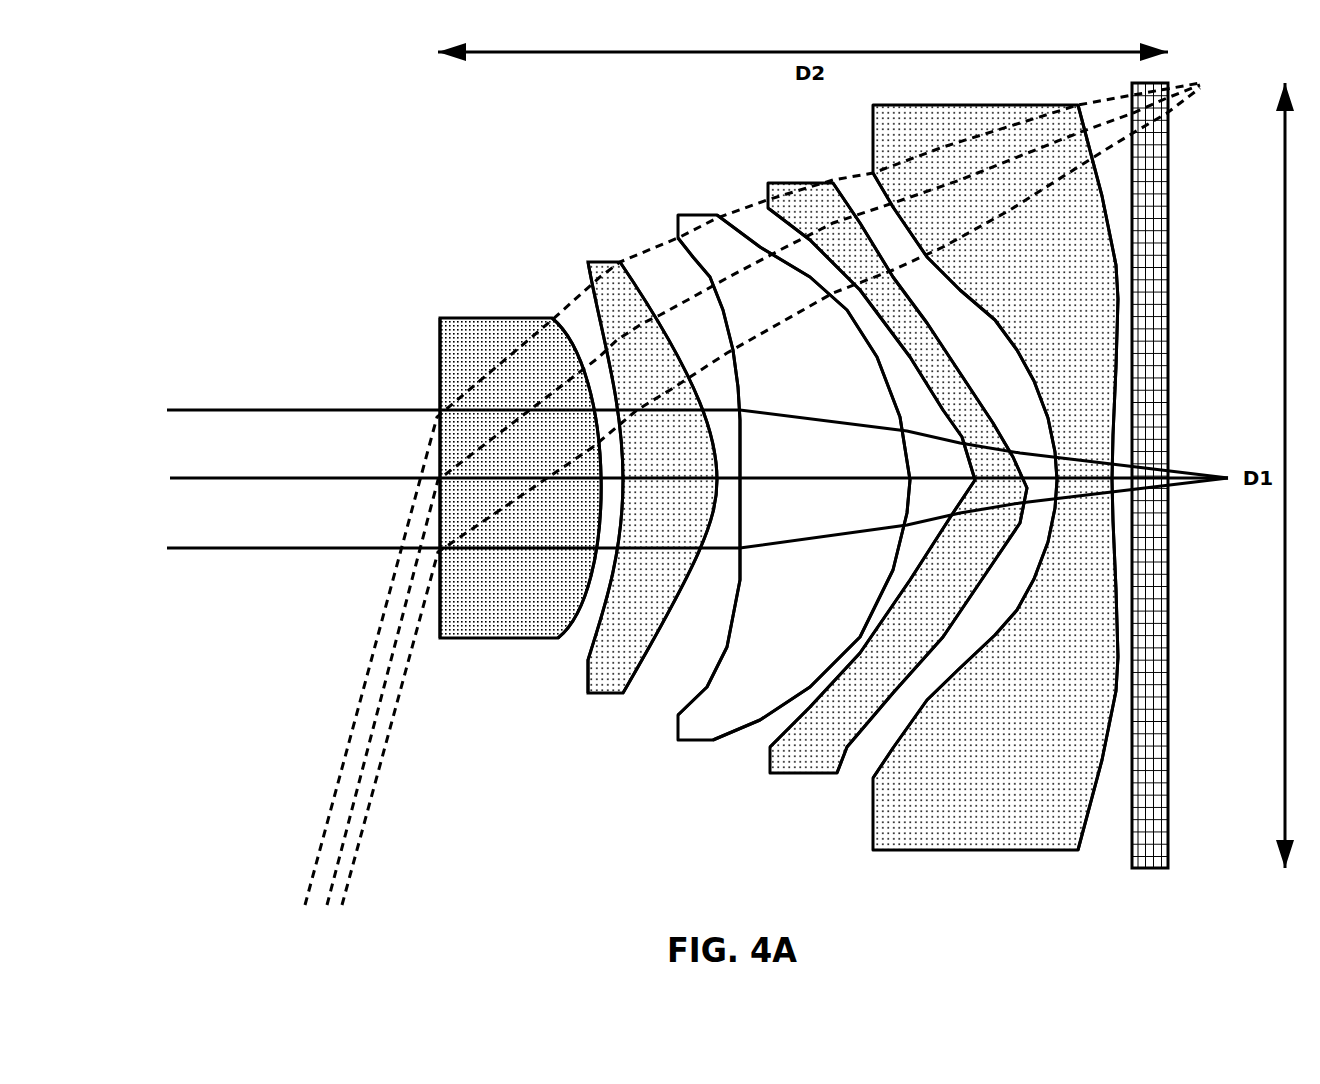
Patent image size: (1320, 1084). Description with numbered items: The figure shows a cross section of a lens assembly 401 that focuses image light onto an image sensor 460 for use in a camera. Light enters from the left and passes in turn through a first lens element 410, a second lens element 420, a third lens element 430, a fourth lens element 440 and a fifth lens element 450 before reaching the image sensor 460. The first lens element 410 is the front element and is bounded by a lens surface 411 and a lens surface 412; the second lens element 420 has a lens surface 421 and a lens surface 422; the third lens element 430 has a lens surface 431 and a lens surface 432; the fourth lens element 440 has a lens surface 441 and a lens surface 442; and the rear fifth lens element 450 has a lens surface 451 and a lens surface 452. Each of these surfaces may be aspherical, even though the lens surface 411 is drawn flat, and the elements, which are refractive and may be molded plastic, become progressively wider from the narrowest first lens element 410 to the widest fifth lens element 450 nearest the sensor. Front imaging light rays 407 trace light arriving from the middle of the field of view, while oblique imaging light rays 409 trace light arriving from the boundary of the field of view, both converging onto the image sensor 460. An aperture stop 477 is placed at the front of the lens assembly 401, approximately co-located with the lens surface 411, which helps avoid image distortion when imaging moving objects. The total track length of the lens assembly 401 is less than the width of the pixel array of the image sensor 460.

The lens assembly 401 is at (640, 135).
The front imaging light rays 407 is at (165, 388).
The oblique imaging light rays 409 is at (355, 903).
The first lens element 410 is at (503, 388).
The lens surface 411 is at (439, 373).
The lens surface 412 is at (569, 640).
The second lens element 420 is at (633, 376).
The lens surface 421 is at (588, 277).
The lens surface 422 is at (643, 673).
The third lens element 430 is at (778, 384).
The lens surface 431 is at (678, 242).
The lens surface 432 is at (730, 737).
The fourth lens element 440 is at (900, 333).
The lens surface 441 is at (768, 206).
The lens surface 442 is at (848, 775).
The fifth lens element 450 is at (1030, 249).
The lens surface 451 is at (873, 173).
The lens surface 452 is at (1085, 853).
The image sensor 460 is at (1153, 870).
The aperture stop 477 is at (440, 303).